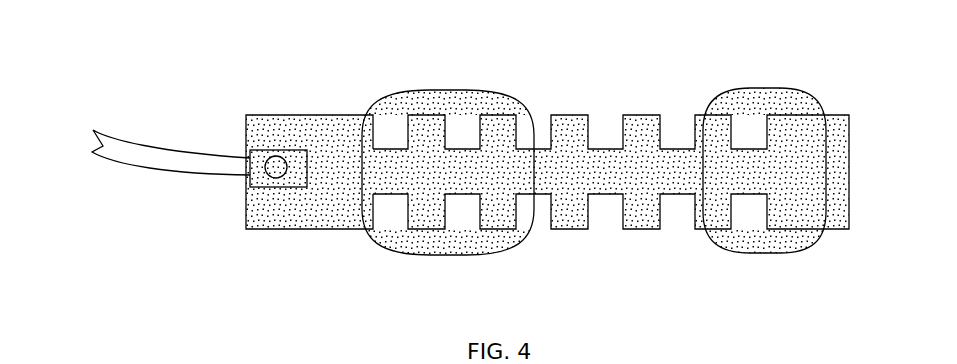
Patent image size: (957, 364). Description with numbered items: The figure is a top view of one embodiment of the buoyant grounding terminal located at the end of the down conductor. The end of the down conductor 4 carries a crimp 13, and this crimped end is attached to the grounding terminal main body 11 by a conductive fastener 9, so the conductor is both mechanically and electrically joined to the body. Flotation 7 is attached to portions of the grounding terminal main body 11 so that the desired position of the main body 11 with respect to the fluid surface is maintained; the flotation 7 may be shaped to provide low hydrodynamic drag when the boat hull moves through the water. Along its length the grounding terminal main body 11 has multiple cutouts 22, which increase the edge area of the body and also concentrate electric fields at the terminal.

The down conductor 4 is at (165, 143).
The flotation 7 is at (430, 81).
The conductive fastener 9 is at (259, 178).
The grounding terminal main body 11 is at (322, 237).
The crimp 13 is at (293, 143).
The cutouts 22 is at (608, 200).